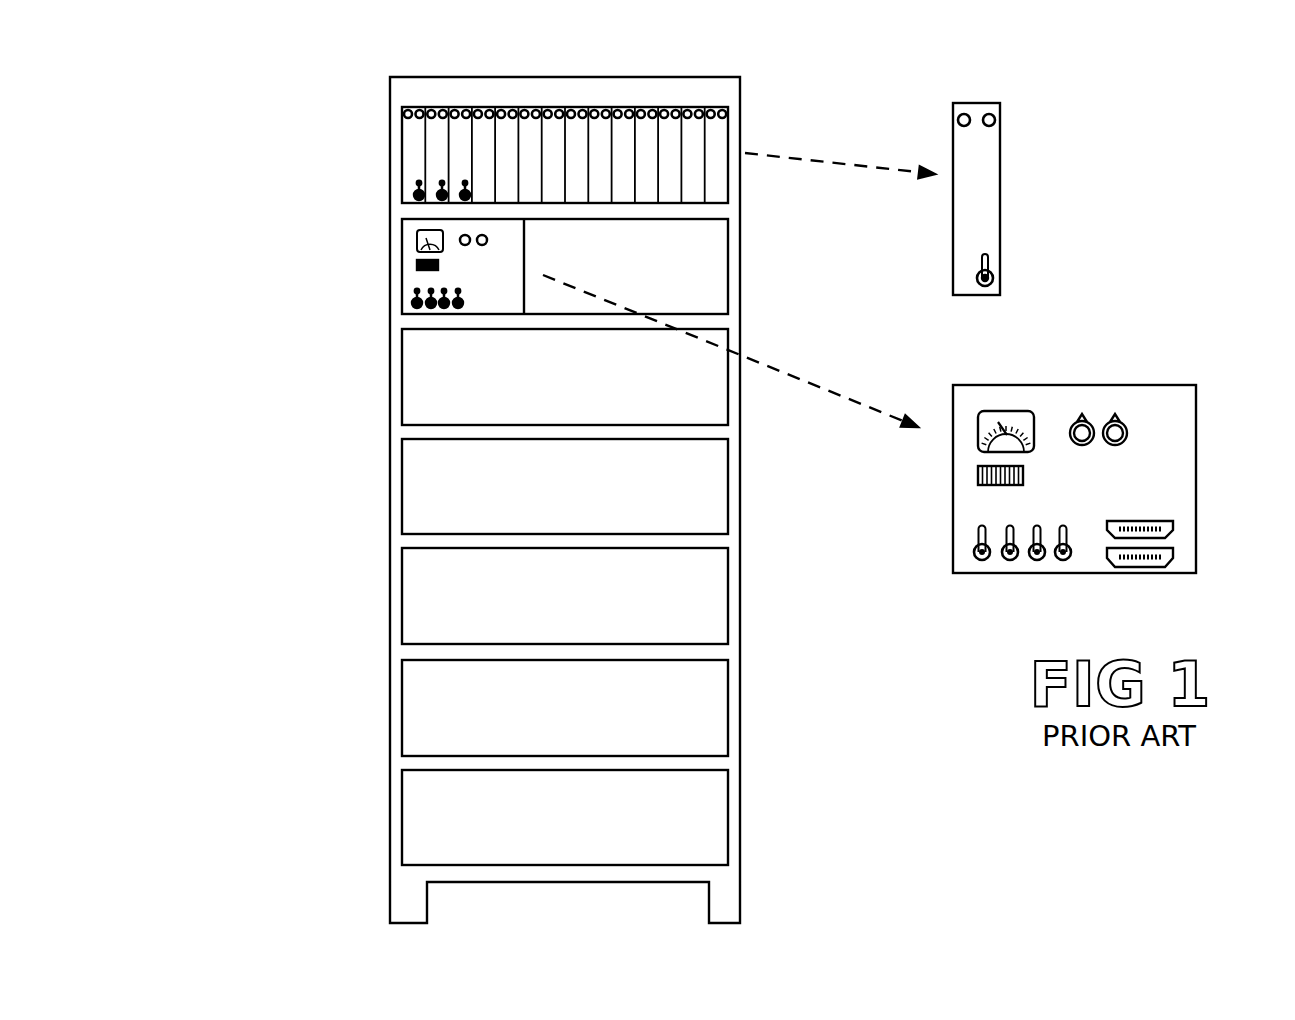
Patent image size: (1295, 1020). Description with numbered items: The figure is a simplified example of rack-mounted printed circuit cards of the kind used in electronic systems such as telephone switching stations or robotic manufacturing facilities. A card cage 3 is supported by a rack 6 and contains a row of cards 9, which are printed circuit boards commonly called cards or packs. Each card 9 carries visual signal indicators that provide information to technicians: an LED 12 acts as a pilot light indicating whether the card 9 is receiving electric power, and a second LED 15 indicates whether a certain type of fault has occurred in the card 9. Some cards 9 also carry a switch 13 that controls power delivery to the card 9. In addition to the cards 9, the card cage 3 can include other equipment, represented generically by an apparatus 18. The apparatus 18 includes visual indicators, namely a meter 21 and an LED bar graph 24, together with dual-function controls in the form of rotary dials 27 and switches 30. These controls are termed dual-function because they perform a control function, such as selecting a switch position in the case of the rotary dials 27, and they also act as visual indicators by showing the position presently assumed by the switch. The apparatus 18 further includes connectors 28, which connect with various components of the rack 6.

The card cage 3 is at (378, 201).
The rack 6 is at (364, 656).
The card 9 is at (693, 107).
The LED 12 is at (998, 129).
The switch 13 is at (987, 255).
The second LED 15 is at (955, 129).
The apparatus 18 is at (1110, 385).
The meter 21 is at (1027, 394).
The LED bar graph 24 is at (962, 499).
The rotary dials 27 is at (1145, 455).
The connectors 28 is at (1206, 518).
The switches 30 is at (953, 570).